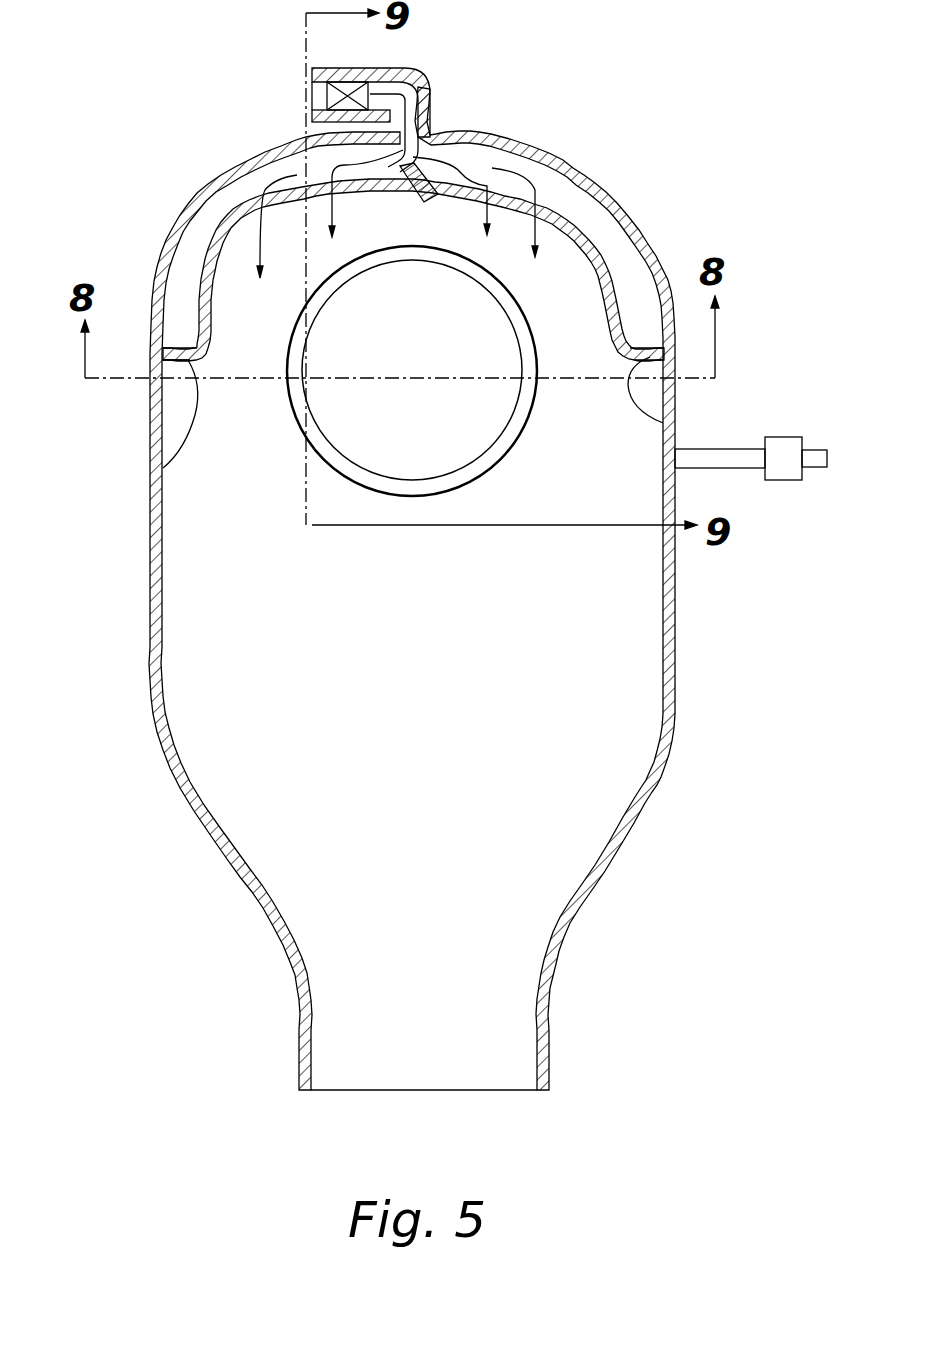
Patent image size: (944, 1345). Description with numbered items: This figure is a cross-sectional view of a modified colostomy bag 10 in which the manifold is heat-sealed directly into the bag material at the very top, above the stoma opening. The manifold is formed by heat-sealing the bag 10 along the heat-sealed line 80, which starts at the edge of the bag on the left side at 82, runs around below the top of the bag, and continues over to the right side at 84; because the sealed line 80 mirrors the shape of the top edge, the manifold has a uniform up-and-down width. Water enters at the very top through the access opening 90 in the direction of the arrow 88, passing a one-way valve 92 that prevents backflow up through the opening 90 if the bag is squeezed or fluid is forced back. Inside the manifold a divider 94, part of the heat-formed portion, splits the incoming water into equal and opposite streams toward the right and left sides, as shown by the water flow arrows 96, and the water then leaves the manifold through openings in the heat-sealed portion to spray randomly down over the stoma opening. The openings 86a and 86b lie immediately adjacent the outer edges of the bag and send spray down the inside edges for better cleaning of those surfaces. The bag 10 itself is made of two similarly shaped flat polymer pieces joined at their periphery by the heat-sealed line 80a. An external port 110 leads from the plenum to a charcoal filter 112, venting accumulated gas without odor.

The bag 10 is at (268, 764).
The heat-sealed line 80 is at (200, 307).
The peripheral heat-sealed line 80a is at (672, 688).
The left edge end of sealed line 82 is at (163, 468).
The right side end of sealed line 84 is at (663, 423).
The opening adjacent outer edge 86a is at (150, 420).
The opening adjacent outer edge 86b is at (653, 262).
The access opening flow arrow 88 is at (283, 92).
The access opening 90 is at (392, 67).
The one-way valve 92 is at (365, 68).
The divider 94 is at (447, 183).
The water flow arrows 96 is at (267, 187).
The external port 110 is at (743, 468).
The charcoal filter 112 is at (783, 456).